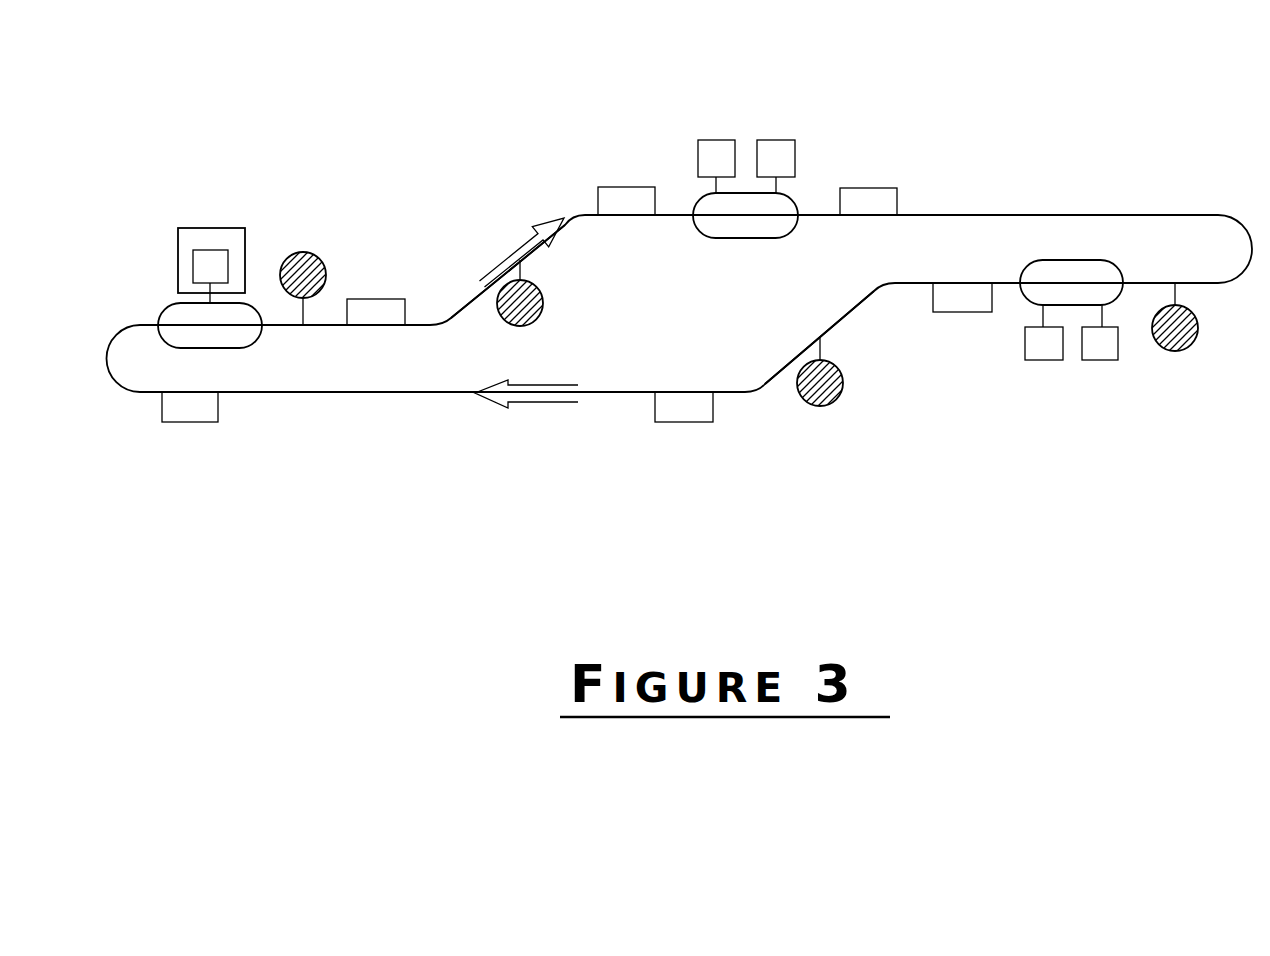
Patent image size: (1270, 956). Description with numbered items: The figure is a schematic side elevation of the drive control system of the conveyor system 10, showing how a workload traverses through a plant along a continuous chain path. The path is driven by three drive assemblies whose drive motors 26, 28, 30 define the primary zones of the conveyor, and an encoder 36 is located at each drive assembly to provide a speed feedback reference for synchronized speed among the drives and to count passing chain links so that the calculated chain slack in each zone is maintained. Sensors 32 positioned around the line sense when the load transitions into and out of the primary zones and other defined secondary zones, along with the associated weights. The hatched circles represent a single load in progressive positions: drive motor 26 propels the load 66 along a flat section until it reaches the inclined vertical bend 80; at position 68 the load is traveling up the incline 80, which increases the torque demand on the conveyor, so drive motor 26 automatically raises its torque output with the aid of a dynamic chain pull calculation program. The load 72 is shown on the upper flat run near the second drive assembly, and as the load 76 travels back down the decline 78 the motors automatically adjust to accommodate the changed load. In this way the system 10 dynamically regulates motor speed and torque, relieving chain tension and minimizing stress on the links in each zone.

The conveyor system 10 is at (358, 110).
The drive motor 26 is at (782, 158).
The drive motor 28 is at (1044, 342).
The drive motor 30 is at (190, 242).
The sensors 32 is at (377, 310).
The encoders 36 is at (212, 270).
The load 66 is at (298, 258).
The load 68 is at (538, 312).
The load 72 is at (1162, 347).
The load 76 is at (806, 403).
The decline 78 is at (847, 315).
The inclined vertical bend 80 is at (472, 297).